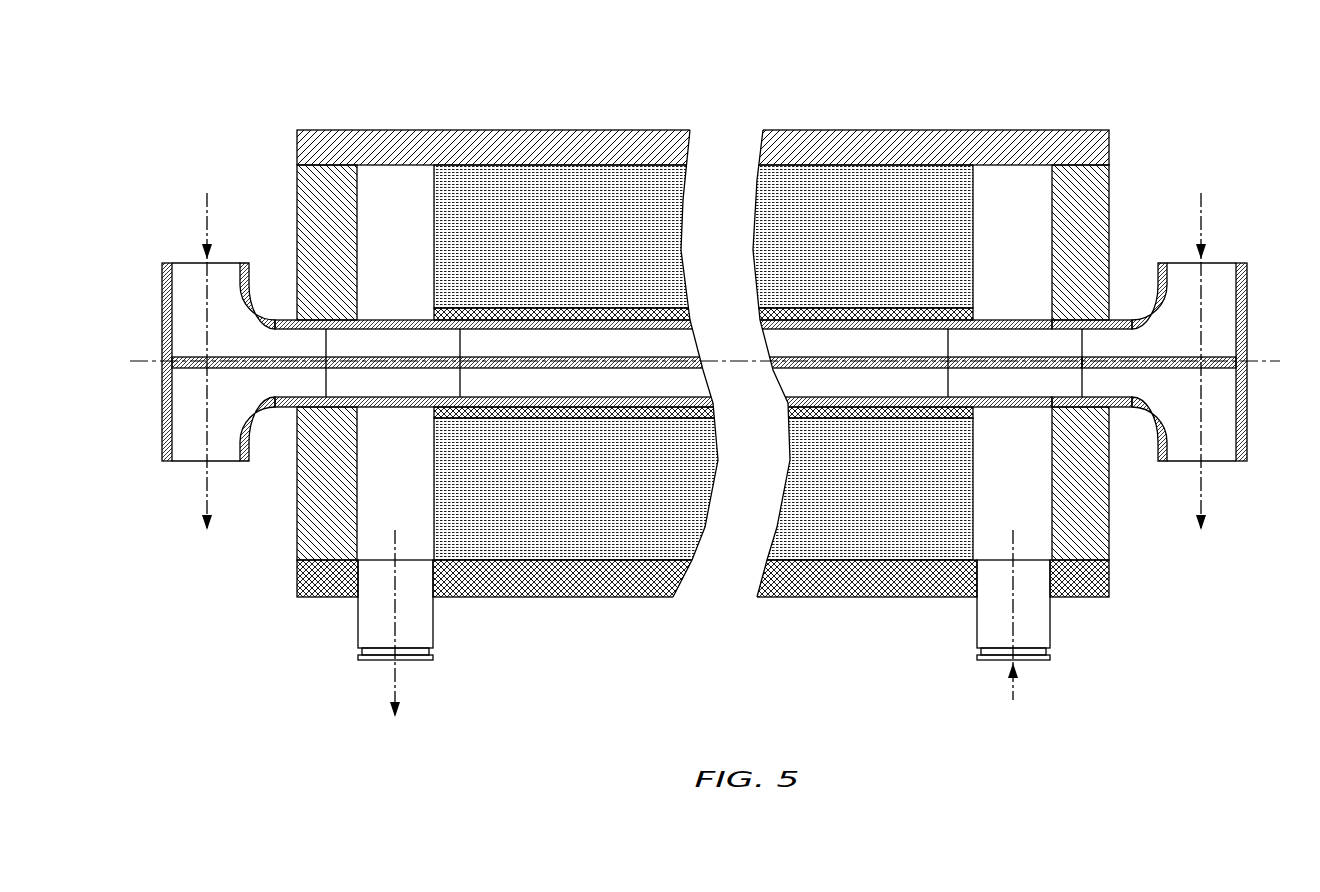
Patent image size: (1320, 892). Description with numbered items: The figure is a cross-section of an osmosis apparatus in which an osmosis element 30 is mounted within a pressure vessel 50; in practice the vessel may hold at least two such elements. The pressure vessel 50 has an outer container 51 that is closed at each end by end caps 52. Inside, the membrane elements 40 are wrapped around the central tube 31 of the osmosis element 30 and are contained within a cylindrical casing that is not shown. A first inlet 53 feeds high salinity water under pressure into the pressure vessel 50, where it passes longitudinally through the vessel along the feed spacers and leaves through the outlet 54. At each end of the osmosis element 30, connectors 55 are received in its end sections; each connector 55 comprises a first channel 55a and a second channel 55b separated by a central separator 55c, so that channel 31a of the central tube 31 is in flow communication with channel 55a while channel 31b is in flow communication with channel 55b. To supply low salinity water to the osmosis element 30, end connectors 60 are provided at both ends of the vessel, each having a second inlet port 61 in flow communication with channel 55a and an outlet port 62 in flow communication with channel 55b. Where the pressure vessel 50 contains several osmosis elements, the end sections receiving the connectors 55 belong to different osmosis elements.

The osmosis element 30 is at (627, 369).
The central tube 31 is at (627, 369).
The channel 31a is at (830, 343).
The channel 31b is at (915, 383).
The membrane element 40 is at (960, 180).
The pressure vessel 50 is at (480, 105).
The outer container 51 is at (577, 150).
The end cap 52 is at (313, 182).
The first inlet 53 is at (1040, 655).
The outlet 54 is at (410, 655).
The connector 55 is at (305, 285).
The first channel 55a is at (1072, 330).
The second channel 55b is at (1060, 382).
The central separator 55c is at (1077, 370).
The end connector 60 is at (693, 383).
The second inlet port 61 is at (190, 270).
The outlet port 62 is at (185, 463).